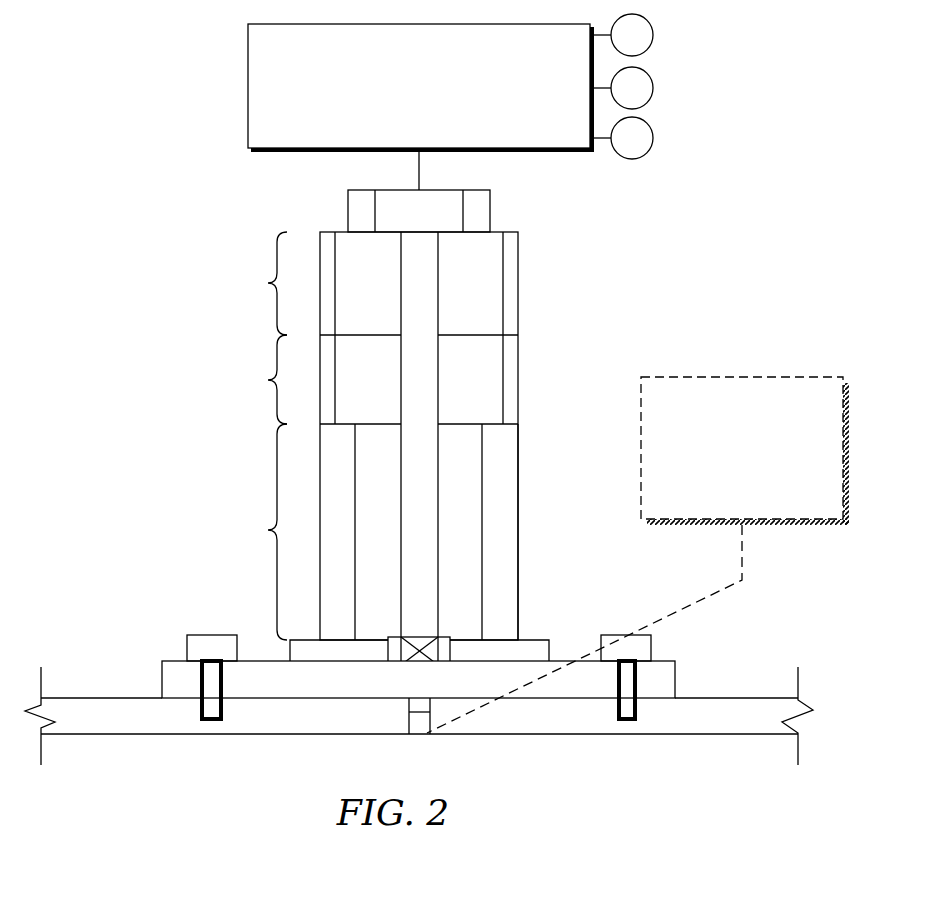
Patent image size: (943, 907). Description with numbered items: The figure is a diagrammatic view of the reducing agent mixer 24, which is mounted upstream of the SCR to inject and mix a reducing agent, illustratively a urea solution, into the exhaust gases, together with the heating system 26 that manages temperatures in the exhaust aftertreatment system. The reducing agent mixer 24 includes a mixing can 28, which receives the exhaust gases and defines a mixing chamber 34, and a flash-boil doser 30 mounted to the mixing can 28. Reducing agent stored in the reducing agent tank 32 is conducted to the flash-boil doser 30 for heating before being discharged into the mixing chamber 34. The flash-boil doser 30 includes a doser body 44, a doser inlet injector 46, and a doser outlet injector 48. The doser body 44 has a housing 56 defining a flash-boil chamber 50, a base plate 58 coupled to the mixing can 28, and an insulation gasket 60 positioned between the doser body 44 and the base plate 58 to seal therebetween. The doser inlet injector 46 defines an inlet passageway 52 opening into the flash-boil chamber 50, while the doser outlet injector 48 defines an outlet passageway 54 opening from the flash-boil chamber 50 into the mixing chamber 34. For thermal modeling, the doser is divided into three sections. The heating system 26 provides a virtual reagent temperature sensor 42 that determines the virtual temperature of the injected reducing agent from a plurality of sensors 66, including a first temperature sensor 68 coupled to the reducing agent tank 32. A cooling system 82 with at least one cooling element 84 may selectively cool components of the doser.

The reducing agent mixer 24 is at (102, 87).
The heating system 26 is at (655, 305).
The mixing can 28 is at (112, 692).
The flash-boil doser 30 is at (183, 308).
The reducing agent tank 32 is at (248, 87).
The mixing chamber 34 is at (483, 582).
The virtual reagent temperature sensor 42 is at (741, 377).
The doser body 44 is at (587, 475).
The doser inlet injector 46 is at (436, 189).
The doser outlet injector 48 is at (450, 645).
The flash-boil chamber 50 is at (438, 510).
The inlet passageway 52 is at (407, 253).
The outlet passageway 54 is at (407, 722).
The housing 56 is at (518, 522).
The base plate 58 is at (172, 655).
The insulation gasket 60 is at (290, 650).
The plurality of sensors 66 is at (710, 100).
The first temperature sensor 68 is at (654, 36).
The cooling system 82 is at (612, 290).
The cooling element 84 is at (492, 207).